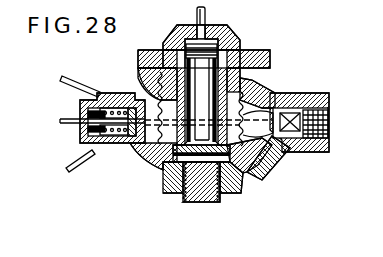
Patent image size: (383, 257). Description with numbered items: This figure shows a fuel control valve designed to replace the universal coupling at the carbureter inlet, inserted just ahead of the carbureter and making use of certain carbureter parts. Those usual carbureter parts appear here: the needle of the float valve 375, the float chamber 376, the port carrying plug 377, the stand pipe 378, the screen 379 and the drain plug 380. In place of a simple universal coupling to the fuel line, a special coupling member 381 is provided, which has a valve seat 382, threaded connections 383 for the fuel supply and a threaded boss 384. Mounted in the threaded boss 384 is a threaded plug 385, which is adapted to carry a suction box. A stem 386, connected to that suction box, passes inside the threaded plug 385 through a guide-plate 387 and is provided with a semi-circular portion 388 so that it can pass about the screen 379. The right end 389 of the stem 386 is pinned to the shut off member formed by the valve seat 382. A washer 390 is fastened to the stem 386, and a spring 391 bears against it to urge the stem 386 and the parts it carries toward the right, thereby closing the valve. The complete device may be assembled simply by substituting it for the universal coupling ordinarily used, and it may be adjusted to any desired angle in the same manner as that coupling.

The needle of the float valve 375 is at (209, 13).
The float chamber 376 is at (241, 54).
The port carrying plug 377 is at (239, 72).
The stand pipe 378 is at (164, 194).
The screen 379 is at (263, 161).
The drain plug 380 is at (189, 200).
The special coupling member 381 is at (158, 172).
The valve seat 382 is at (292, 96).
The threaded connections 383 is at (330, 152).
The threaded boss 384 is at (101, 150).
The threaded plug 385 is at (84, 141).
The stem 386 is at (80, 118).
The guide-plate 387 is at (132, 93).
The semi-circular portion 388 is at (254, 183).
The right end of the stem 389 is at (270, 152).
The washer 390 is at (96, 146).
The spring 391 is at (107, 93).